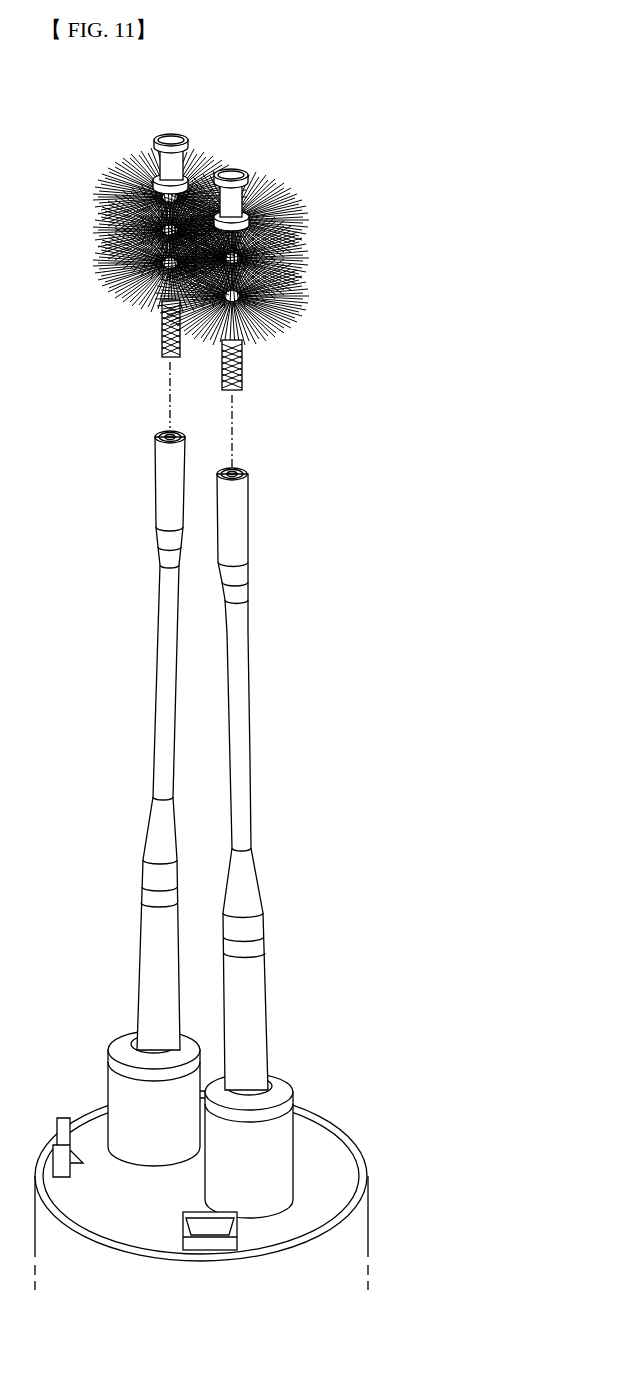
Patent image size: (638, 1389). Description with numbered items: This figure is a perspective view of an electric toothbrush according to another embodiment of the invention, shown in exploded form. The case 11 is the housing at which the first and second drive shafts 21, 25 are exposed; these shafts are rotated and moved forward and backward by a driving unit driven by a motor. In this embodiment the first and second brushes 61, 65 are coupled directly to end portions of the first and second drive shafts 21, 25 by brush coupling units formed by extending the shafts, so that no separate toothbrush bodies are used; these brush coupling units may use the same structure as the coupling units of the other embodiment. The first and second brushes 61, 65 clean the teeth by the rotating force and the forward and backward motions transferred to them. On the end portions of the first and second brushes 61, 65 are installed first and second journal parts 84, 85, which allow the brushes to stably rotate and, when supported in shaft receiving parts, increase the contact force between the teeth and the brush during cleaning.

The case 11 is at (378, 1230).
The first drive shaft 21 is at (163, 590).
The second drive shaft 25 is at (238, 630).
The first brush 61 is at (122, 284).
The second brush 65 is at (284, 318).
The first journal part 84 is at (190, 155).
The second journal part 85 is at (250, 191).